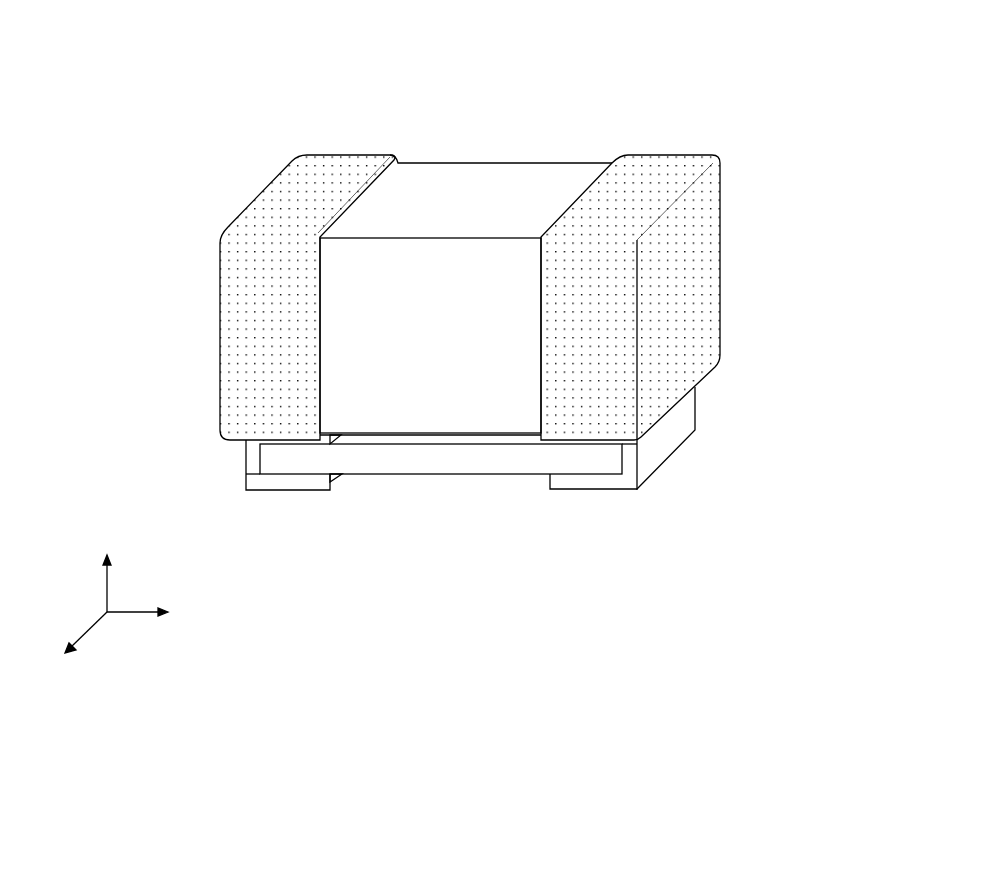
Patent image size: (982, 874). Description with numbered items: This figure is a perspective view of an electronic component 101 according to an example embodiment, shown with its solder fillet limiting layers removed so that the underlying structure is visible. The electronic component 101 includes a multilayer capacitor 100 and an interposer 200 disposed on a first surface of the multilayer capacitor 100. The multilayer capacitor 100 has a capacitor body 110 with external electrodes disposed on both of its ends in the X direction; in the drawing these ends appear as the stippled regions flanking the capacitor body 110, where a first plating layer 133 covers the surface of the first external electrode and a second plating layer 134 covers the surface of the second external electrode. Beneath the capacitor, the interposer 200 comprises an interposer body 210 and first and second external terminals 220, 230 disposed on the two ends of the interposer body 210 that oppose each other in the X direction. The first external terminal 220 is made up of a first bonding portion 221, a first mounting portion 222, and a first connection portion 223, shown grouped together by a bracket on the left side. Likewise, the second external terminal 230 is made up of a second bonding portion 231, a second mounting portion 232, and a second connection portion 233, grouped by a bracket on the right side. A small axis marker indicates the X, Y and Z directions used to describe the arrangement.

The electronic component 101 is at (495, 38).
The multilayer capacitor 100 is at (567, 146).
The capacitor body 110 is at (485, 167).
The first plating layer 133 is at (252, 300).
The second plating layer 134 is at (702, 207).
The interposer 200 is at (356, 497).
The interposer body 210 is at (470, 475).
The first external terminal 220 is at (168, 467).
The first bonding portion 221 is at (286, 441).
The first mounting portion 222 is at (284, 488).
The first connection portion 223 is at (254, 476).
The second external terminal 230 is at (714, 478).
The second bonding portion 231 is at (598, 443).
The second mounting portion 232 is at (604, 484).
The second connection portion 233 is at (630, 476).